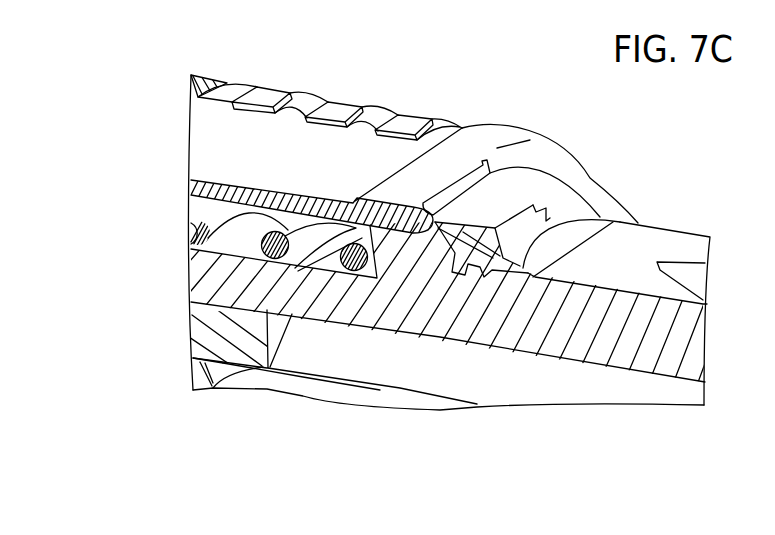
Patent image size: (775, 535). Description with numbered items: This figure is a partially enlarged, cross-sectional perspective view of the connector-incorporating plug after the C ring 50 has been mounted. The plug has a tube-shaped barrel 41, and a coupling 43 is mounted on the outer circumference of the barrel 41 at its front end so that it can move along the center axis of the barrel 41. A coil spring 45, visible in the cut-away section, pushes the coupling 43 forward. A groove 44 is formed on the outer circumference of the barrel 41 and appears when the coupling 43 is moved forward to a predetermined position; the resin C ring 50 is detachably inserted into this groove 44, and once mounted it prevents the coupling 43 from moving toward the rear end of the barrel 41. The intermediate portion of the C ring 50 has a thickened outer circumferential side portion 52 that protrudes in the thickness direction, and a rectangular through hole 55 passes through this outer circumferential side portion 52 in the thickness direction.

The barrel 41 is at (693, 243).
The coupling 43 is at (291, 128).
The groove 44 is at (478, 262).
The coil spring 45 is at (202, 208).
The C ring 50 is at (627, 192).
The outer circumferential side portion 52 is at (493, 187).
The through hole 55 is at (542, 205).